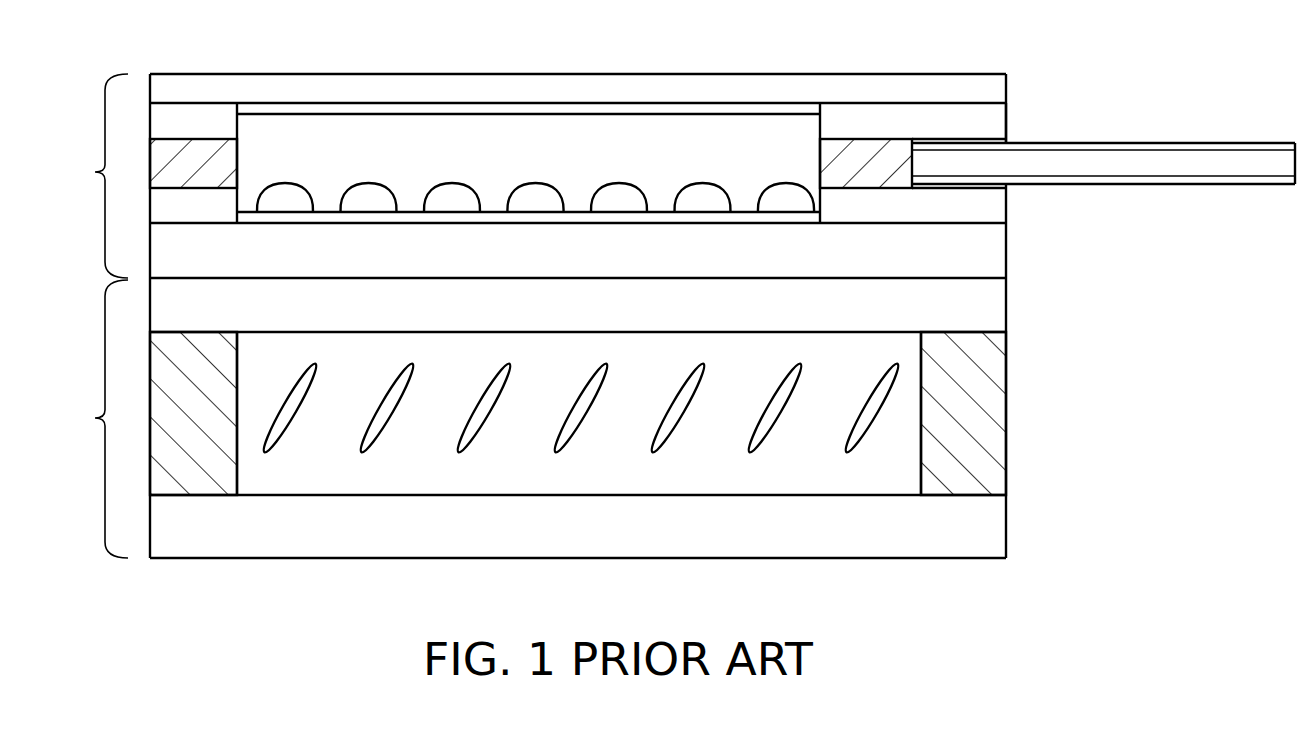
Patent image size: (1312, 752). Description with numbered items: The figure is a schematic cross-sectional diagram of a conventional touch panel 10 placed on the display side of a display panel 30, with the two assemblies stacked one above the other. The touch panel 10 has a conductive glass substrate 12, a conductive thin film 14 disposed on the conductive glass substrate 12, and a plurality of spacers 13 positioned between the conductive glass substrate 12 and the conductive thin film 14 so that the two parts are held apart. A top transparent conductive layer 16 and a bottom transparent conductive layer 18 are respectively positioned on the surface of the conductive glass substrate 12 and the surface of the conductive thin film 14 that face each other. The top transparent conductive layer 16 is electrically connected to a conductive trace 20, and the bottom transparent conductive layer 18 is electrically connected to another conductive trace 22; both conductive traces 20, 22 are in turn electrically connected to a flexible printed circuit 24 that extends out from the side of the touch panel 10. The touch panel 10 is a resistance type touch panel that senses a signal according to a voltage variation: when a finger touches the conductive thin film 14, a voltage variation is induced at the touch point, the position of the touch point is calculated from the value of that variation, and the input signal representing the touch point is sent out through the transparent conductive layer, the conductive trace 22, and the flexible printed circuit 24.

The touch panel 10 is at (96, 172).
The conductive glass substrate 12 is at (992, 257).
The spacers 13 is at (282, 197).
The conductive thin film 14 is at (663, 87).
The top transparent conductive layer 16 is at (573, 108).
The bottom transparent conductive layer 18 is at (405, 222).
The conductive trace 20 is at (992, 123).
The conductive trace 22 is at (992, 212).
The flexible printed circuit 24 is at (1212, 165).
The display panel 30 is at (96, 418).